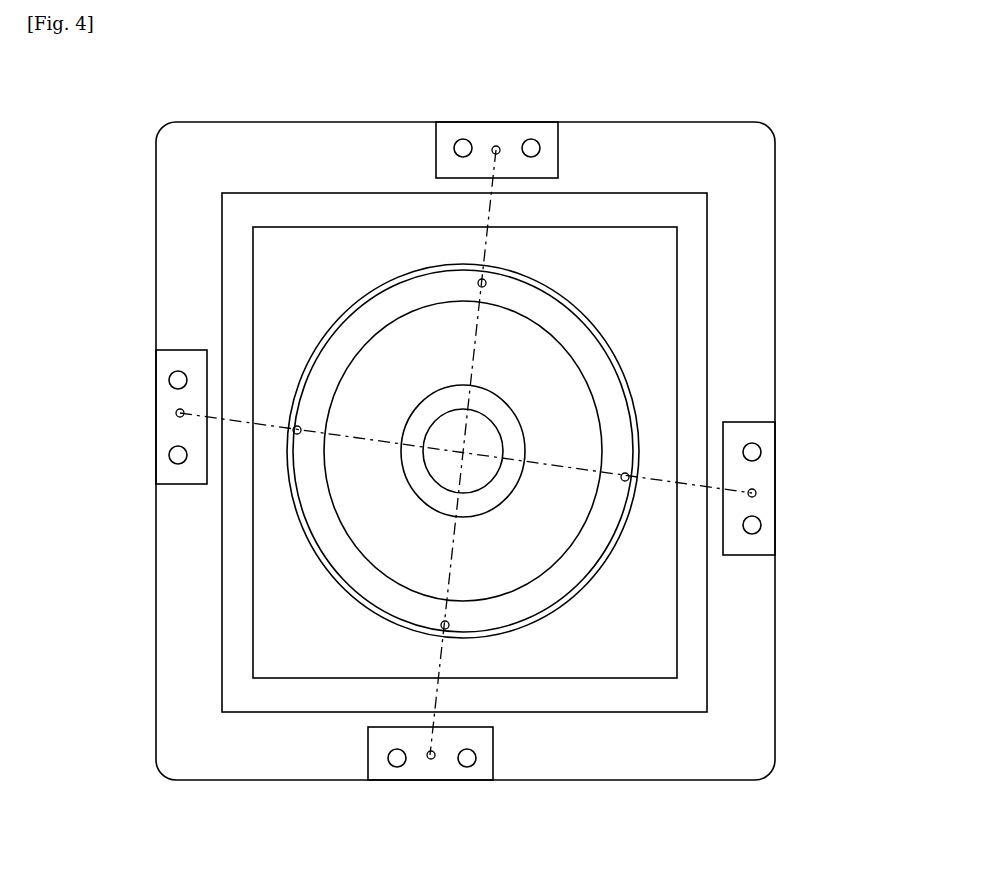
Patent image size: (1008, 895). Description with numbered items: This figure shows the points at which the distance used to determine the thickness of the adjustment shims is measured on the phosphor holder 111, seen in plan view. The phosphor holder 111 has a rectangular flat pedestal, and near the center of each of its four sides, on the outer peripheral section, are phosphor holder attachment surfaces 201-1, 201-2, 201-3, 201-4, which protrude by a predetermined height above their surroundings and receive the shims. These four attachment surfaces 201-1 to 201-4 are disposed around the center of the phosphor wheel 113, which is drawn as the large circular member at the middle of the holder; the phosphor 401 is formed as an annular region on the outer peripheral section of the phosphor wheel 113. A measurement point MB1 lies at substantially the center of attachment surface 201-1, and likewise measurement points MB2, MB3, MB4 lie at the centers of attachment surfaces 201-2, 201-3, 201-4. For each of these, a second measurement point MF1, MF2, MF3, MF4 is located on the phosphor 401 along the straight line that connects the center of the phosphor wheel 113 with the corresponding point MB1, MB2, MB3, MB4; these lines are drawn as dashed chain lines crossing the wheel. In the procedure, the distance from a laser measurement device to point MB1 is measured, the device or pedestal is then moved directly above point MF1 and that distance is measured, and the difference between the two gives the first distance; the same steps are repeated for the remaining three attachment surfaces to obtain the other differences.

The phosphor holder 111 is at (775, 200).
The phosphor wheel 113 is at (632, 390).
The phosphor 401 is at (598, 355).
The phosphor holder attachment surface 201-1 is at (543, 122).
The phosphor holder attachment surface 201-2 is at (777, 462).
The phosphor holder attachment surface 201-3 is at (482, 780).
The phosphor holder attachment surface 201-4 is at (158, 372).
The measurement point MB1 is at (493, 147).
The measurement point MB2 is at (756, 496).
The measurement point MB3 is at (429, 759).
The measurement point MB4 is at (177, 415).
The measurement point MF1 is at (479, 280).
The measurement point MF2 is at (628, 481).
The measurement point MF3 is at (448, 628).
The measurement point MF4 is at (294, 433).